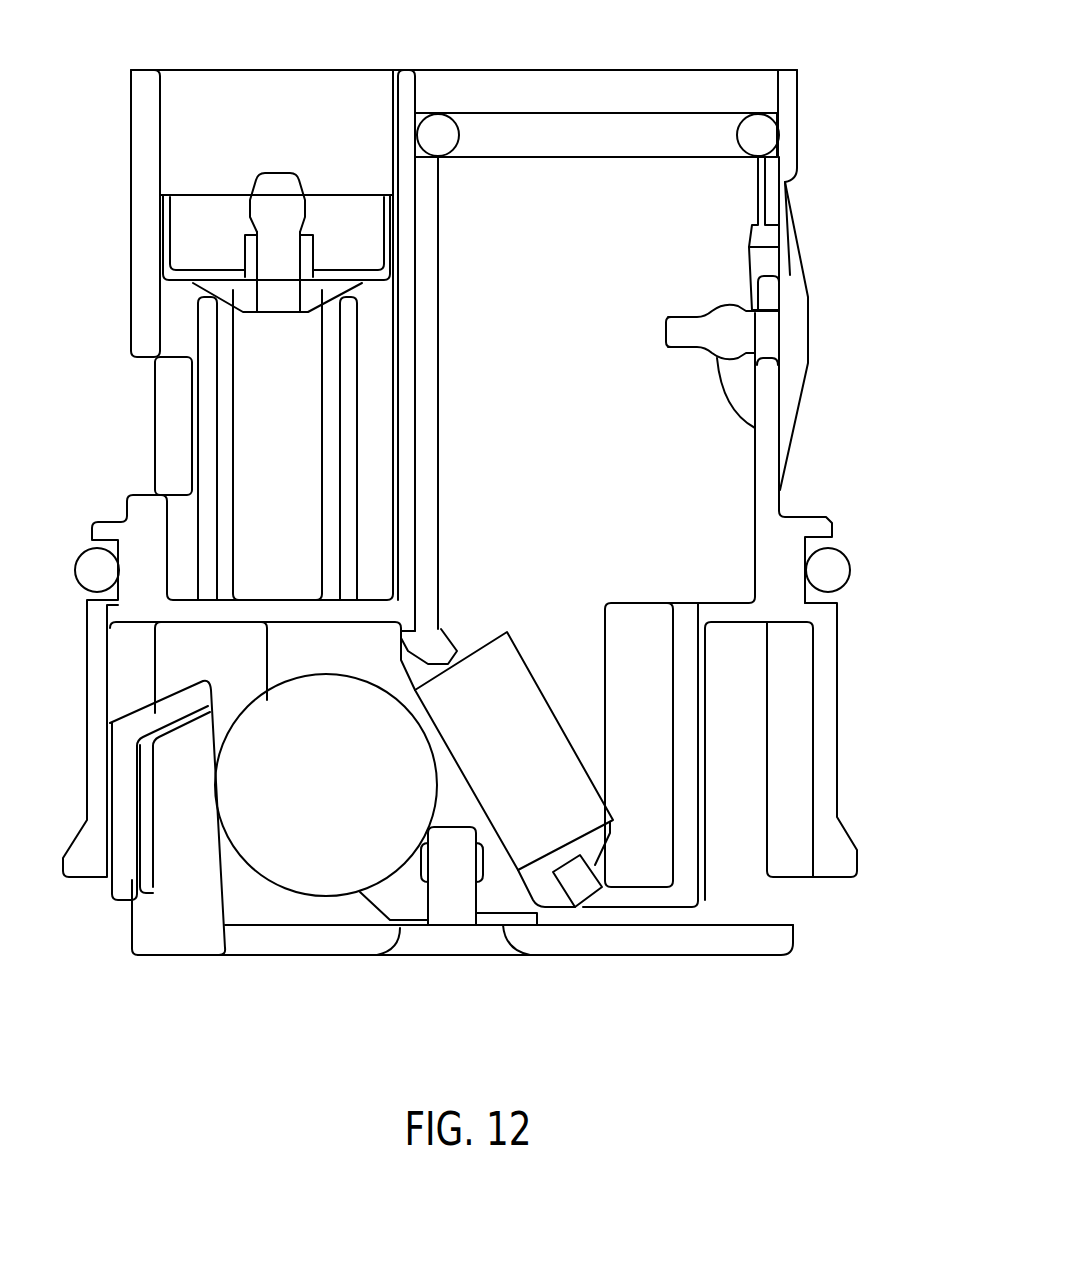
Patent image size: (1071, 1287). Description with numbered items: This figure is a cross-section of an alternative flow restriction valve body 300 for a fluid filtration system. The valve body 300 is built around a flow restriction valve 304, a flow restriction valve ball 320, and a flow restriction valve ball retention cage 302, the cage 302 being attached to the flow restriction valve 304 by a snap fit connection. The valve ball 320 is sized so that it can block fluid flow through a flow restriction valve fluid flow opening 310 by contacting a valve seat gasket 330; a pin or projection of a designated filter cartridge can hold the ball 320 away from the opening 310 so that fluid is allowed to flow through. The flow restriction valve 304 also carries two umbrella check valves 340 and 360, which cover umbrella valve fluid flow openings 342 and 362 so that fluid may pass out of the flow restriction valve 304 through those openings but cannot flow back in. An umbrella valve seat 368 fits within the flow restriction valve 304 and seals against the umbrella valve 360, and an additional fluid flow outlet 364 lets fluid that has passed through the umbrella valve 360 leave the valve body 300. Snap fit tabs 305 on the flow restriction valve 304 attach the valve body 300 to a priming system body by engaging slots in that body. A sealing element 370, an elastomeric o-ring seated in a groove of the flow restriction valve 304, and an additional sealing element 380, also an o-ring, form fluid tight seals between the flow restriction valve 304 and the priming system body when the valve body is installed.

The flow restriction valve body 300 is at (836, 102).
The flow restriction valve ball retention cage 302 is at (755, 940).
The flow restriction valve 304 is at (748, 612).
The snap fit tabs 305 is at (848, 863).
The flow restriction valve fluid flow opening 310 is at (513, 802).
The flow restriction valve ball 320 is at (308, 843).
The valve seat gasket 330 is at (548, 897).
The umbrella valve 340 is at (798, 320).
The umbrella valve fluid flow opening 342 is at (768, 262).
The umbrella valve 360 is at (250, 290).
The umbrella valve fluid flow opening 362 is at (343, 268).
The additional fluid flow outlet 364 is at (160, 405).
The umbrella valve seat 368 is at (190, 232).
The sealing element 370 is at (85, 556).
The sealing element 380 is at (670, 127).